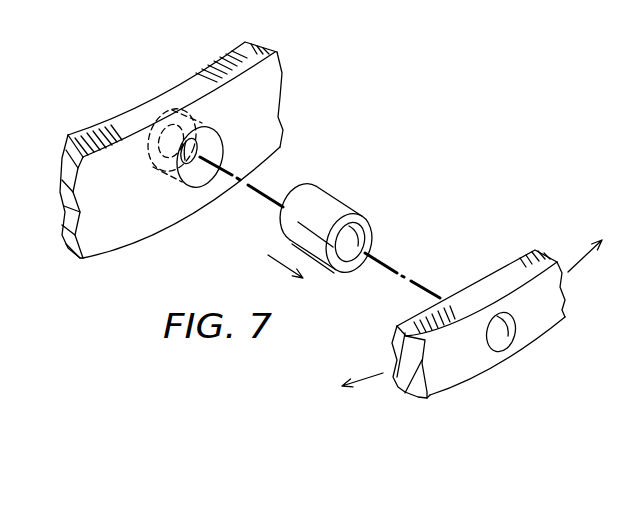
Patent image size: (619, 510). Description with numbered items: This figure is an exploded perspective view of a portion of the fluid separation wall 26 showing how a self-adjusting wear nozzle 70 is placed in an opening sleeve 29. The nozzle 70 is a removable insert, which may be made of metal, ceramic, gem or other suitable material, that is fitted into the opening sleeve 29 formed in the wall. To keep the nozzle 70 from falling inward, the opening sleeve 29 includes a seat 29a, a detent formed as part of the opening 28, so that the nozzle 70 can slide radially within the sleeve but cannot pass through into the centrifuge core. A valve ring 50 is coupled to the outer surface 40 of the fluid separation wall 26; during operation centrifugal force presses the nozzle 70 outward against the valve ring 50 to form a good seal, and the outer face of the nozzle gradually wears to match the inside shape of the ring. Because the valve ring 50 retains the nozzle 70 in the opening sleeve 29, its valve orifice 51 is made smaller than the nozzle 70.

The fluid separation wall 26 is at (441, 118).
The opening 28 is at (367, 248).
The opening sleeve 29 is at (201, 167).
The seat 29a is at (152, 147).
The outer surface 40 is at (205, 83).
The valve ring 50 is at (505, 283).
The valve orifice 51 is at (498, 334).
The self-adjusting wear nozzle 70 is at (349, 216).